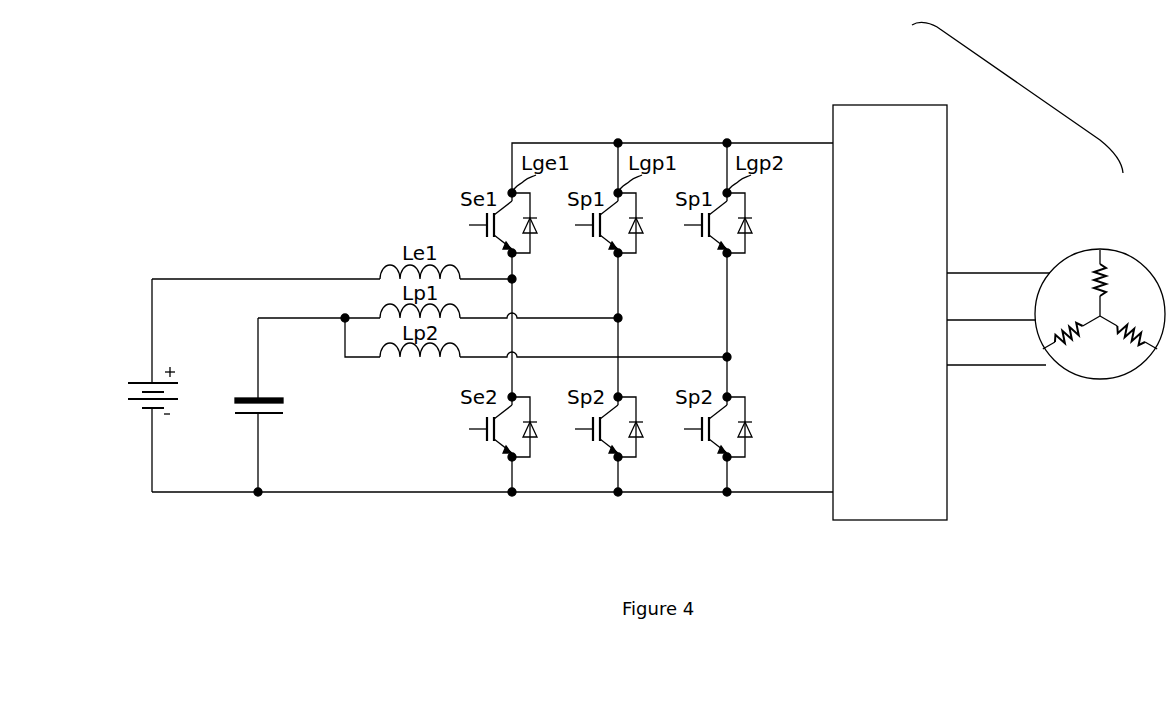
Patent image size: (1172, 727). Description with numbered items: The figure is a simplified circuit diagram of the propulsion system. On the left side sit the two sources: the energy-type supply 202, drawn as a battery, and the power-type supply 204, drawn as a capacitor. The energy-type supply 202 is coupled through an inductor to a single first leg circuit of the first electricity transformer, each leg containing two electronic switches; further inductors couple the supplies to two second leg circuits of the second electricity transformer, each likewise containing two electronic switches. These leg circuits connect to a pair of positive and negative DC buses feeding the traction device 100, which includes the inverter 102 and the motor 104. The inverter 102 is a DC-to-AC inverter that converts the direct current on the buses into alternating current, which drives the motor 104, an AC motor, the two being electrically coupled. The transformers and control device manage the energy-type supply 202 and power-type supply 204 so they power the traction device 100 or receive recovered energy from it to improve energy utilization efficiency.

The traction device 100 is at (1030, 87).
The inverter 102 is at (887, 105).
The motor 104 is at (1097, 250).
The energy-type supply 202 is at (172, 383).
The power-type supply 204 is at (262, 400).